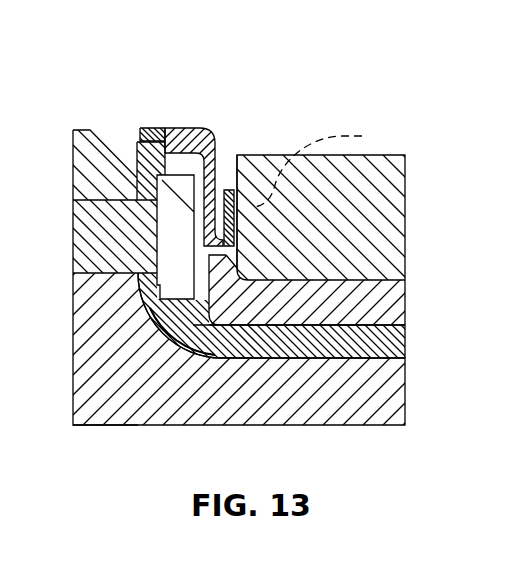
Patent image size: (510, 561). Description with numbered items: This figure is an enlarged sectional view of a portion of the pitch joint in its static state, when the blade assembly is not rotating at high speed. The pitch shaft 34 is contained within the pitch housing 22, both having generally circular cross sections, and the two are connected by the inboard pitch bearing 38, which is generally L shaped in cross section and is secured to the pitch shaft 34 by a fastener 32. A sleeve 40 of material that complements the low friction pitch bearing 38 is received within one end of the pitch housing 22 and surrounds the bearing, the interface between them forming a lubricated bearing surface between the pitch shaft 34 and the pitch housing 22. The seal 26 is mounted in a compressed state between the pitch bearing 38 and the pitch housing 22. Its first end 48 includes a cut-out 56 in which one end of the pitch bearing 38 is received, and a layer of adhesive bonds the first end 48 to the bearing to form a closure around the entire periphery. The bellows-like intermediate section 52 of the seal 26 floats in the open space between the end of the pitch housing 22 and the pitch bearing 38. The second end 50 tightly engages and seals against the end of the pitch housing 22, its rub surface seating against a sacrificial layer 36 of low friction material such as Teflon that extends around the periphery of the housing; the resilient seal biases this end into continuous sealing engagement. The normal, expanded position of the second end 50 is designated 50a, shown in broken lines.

The pitch housing 22 is at (380, 193).
The seal 26 is at (186, 150).
The fastener 32 is at (84, 232).
The pitch shaft 34 is at (372, 393).
The sacrificial layer 36 is at (237, 193).
The inboard pitch bearing 38 is at (380, 342).
The sleeve 40 is at (380, 300).
The first end 48 is at (175, 140).
The second end 50 is at (228, 190).
The normal expanded position of the second end 50a is at (326, 165).
The intermediate section 52 is at (219, 236).
The cut-out 56 is at (149, 136).